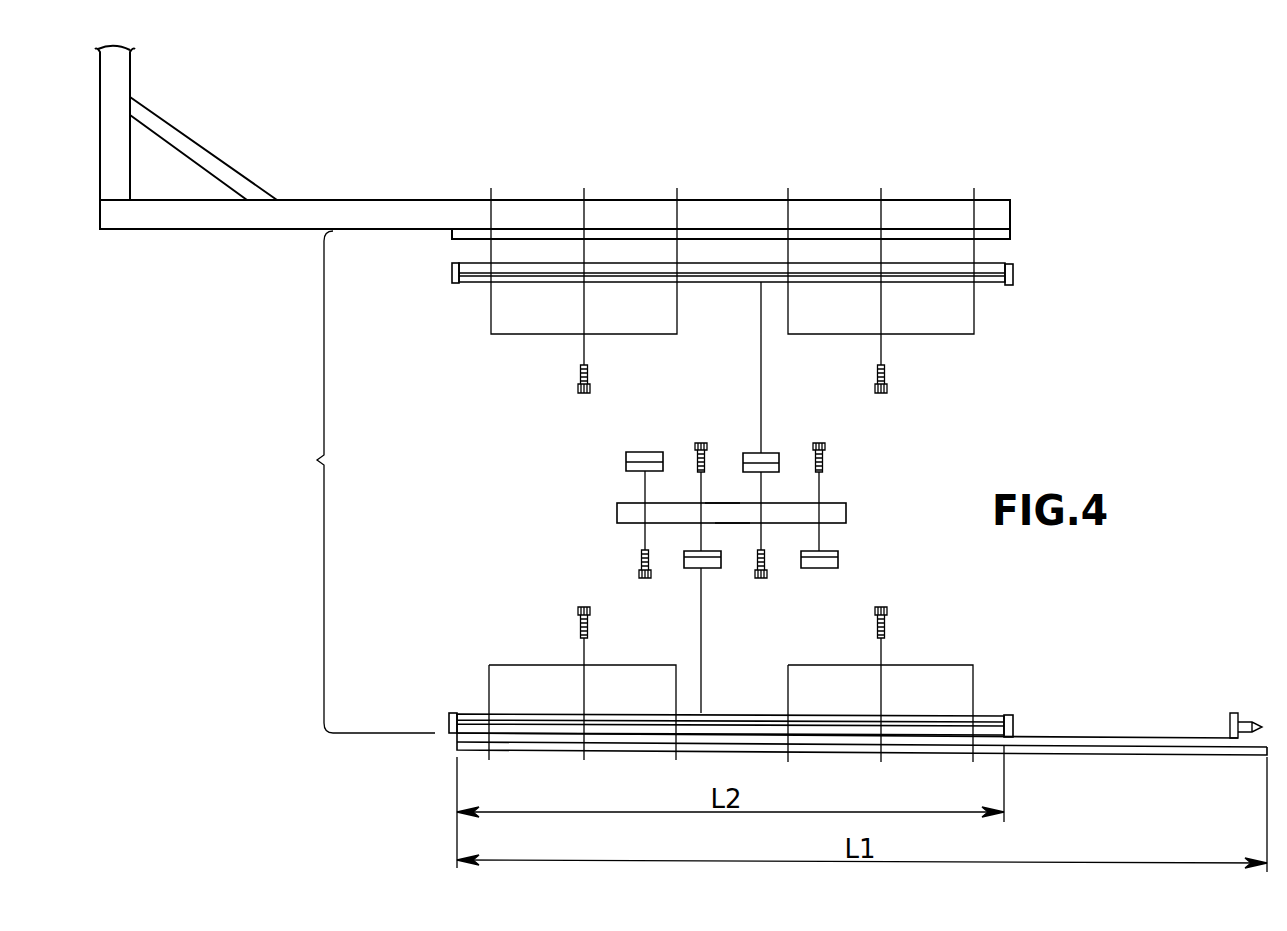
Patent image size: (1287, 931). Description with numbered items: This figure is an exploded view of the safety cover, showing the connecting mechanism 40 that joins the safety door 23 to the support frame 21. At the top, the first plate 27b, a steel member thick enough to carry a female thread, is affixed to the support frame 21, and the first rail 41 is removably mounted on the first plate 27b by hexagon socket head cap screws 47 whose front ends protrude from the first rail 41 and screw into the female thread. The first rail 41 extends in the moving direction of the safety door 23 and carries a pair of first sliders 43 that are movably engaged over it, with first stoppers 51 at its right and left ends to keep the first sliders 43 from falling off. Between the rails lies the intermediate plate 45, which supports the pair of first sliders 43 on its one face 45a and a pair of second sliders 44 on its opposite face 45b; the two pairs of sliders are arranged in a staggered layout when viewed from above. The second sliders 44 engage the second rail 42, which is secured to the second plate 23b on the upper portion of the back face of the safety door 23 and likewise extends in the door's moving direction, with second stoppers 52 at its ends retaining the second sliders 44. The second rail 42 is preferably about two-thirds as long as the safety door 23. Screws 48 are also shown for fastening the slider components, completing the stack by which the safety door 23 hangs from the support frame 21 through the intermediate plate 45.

The support frame 21 is at (626, 201).
The first plate 27b is at (1012, 235).
The connecting mechanism 40 is at (355, 482).
The first rail 41 is at (726, 272).
The first stoppers 51 is at (455, 274).
The hexagon socket head cap screw 47 is at (578, 388).
The first sliders 43 is at (645, 456).
The screws 48 is at (700, 444).
The intermediate plate 45 is at (842, 512).
The one face 45a is at (721, 502).
The opposite face 45b is at (731, 525).
The second sliders 44 is at (692, 569).
The second rail 42 is at (737, 724).
The second stoppers 52 is at (448, 722).
The second plate 23b is at (1130, 738).
The safety door 23 is at (1135, 755).